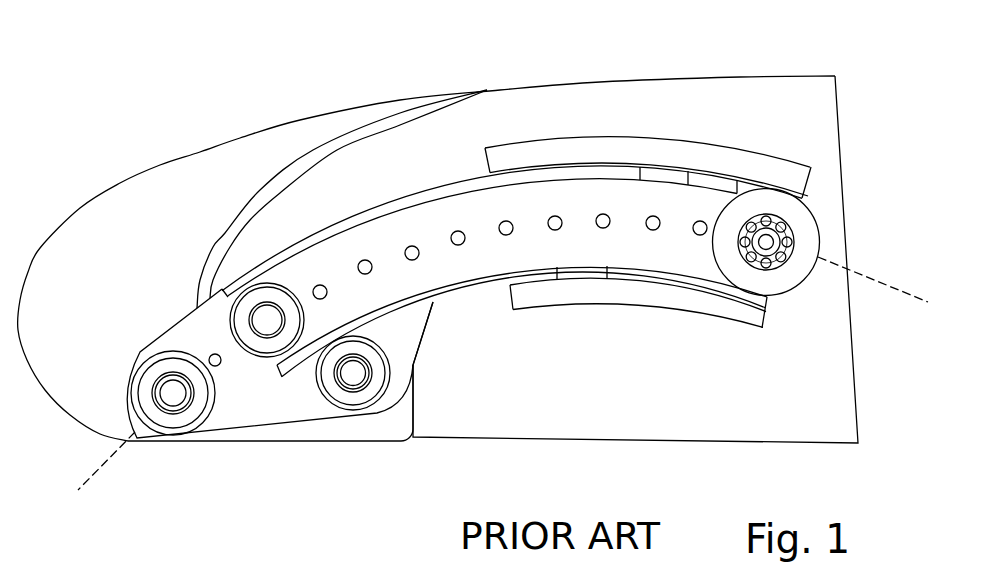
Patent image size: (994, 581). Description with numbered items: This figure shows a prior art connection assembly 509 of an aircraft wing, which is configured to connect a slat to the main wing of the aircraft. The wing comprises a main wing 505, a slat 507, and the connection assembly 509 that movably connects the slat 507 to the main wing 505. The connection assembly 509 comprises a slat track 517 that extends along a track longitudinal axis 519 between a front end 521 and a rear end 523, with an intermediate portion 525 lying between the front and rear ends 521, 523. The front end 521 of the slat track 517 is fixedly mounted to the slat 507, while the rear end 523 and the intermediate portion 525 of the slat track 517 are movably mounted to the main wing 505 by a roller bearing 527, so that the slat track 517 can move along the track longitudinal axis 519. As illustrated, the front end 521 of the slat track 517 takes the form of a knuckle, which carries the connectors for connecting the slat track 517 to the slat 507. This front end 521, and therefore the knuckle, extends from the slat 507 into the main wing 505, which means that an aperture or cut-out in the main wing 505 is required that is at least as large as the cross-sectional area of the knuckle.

The main wing 505 is at (733, 383).
The slat 507 is at (127, 307).
The connection assembly 509 is at (514, 110).
The slat track 517 is at (430, 212).
The track longitudinal axis 519 is at (916, 293).
The front end 521 is at (272, 413).
The rear end 523 is at (737, 193).
The intermediate portion 525 is at (485, 265).
The roller bearing 527 is at (271, 297).